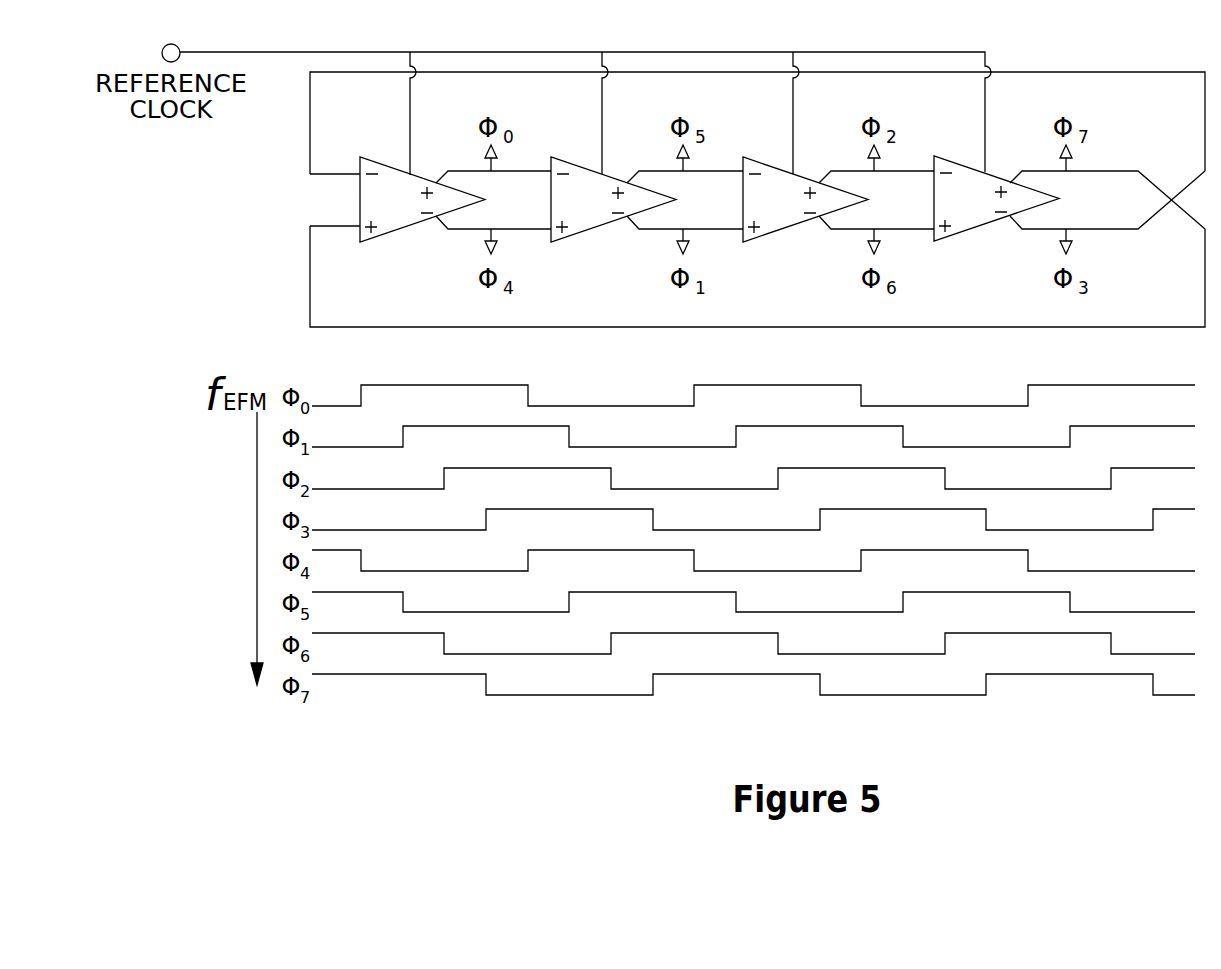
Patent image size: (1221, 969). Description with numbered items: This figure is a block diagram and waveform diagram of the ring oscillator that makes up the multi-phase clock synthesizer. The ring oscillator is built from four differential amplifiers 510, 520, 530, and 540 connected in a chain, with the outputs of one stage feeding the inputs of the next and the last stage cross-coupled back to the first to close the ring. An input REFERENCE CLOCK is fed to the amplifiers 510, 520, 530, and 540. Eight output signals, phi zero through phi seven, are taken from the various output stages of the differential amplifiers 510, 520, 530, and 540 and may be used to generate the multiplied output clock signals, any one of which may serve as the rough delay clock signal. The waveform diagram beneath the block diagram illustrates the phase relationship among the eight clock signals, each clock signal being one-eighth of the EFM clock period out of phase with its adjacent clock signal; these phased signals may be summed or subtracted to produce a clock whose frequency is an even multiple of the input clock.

The differential amplifier 510 is at (380, 240).
The differential amplifier 520 is at (571, 240).
The differential amplifier 530 is at (763, 240).
The differential amplifier 540 is at (954, 239).